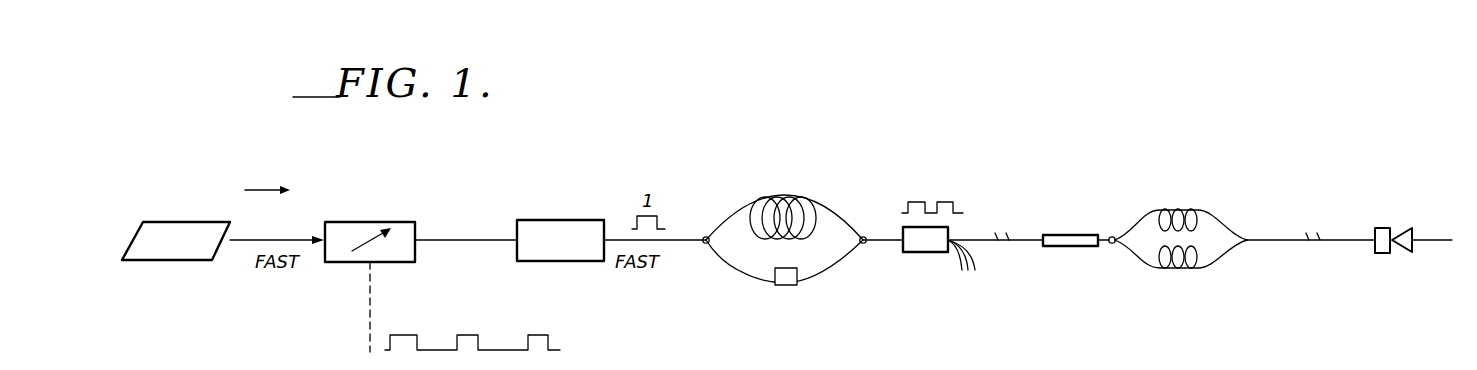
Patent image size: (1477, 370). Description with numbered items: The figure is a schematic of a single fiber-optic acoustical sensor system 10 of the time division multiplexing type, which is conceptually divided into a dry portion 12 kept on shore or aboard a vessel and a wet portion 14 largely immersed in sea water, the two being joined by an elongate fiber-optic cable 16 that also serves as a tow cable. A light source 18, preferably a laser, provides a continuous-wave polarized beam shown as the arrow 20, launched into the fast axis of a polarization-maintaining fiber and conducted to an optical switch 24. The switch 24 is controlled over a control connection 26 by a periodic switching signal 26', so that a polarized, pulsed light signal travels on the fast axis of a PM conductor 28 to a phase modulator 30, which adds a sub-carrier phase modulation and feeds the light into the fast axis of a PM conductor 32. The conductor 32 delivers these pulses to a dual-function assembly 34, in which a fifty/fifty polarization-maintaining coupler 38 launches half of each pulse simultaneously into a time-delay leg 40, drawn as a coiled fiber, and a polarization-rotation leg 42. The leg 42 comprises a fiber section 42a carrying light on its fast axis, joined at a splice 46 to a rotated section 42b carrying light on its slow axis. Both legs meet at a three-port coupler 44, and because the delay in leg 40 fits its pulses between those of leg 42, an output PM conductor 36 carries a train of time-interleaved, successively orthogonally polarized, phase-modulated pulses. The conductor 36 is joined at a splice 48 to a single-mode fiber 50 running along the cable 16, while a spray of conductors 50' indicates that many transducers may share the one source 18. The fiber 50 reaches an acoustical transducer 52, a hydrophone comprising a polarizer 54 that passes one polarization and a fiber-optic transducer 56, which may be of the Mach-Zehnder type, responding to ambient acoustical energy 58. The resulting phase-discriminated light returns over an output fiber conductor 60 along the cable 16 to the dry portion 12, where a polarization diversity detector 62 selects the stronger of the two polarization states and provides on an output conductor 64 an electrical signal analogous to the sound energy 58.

The fiber-optic acoustical sensor system 10 is at (774, 226).
The dry portion 12 is at (596, 145).
The wet portion 14 is at (1181, 223).
The fiber-optic cable 16 is at (963, 241).
The light source 18 is at (181, 218).
The laser light beam 20 is at (260, 190).
The optical switch 24 is at (356, 264).
The control connection 26 is at (397, 307).
The switching signal 26' is at (472, 327).
The polarization-maintaining fiber-optic conductor 28 is at (478, 238).
The phase modulator 30 is at (565, 262).
The polarization-maintaining conductor 32 is at (678, 238).
The dual-function assembly 34 is at (800, 190).
The output PM fiber-optic conductor 36 is at (889, 245).
The polarization-maintaining coupler 38 is at (704, 248).
The time-delay leg 40 is at (836, 214).
The polarization-rotation leg 42 is at (788, 284).
The first fiber section 42a is at (745, 276).
The second fiber section 42b is at (828, 274).
The three-port coupler 44 is at (864, 250).
The splice 46 is at (790, 287).
The splice 48 is at (935, 254).
The single-mode optical fiber conductor 50 is at (1014, 255).
The spray of fiber-optic conductors 50' is at (968, 273).
The acoustical transducer 52 is at (1149, 192).
The polarizer 54 is at (1070, 247).
The fiber-optic transducer 56 is at (1182, 284).
The acoustical energy signal 58 is at (1200, 192).
The output return optical fiber conductor 60 is at (1325, 245).
The polarization diversity detector 62 is at (1403, 227).
The output conductor 64 is at (1440, 242).